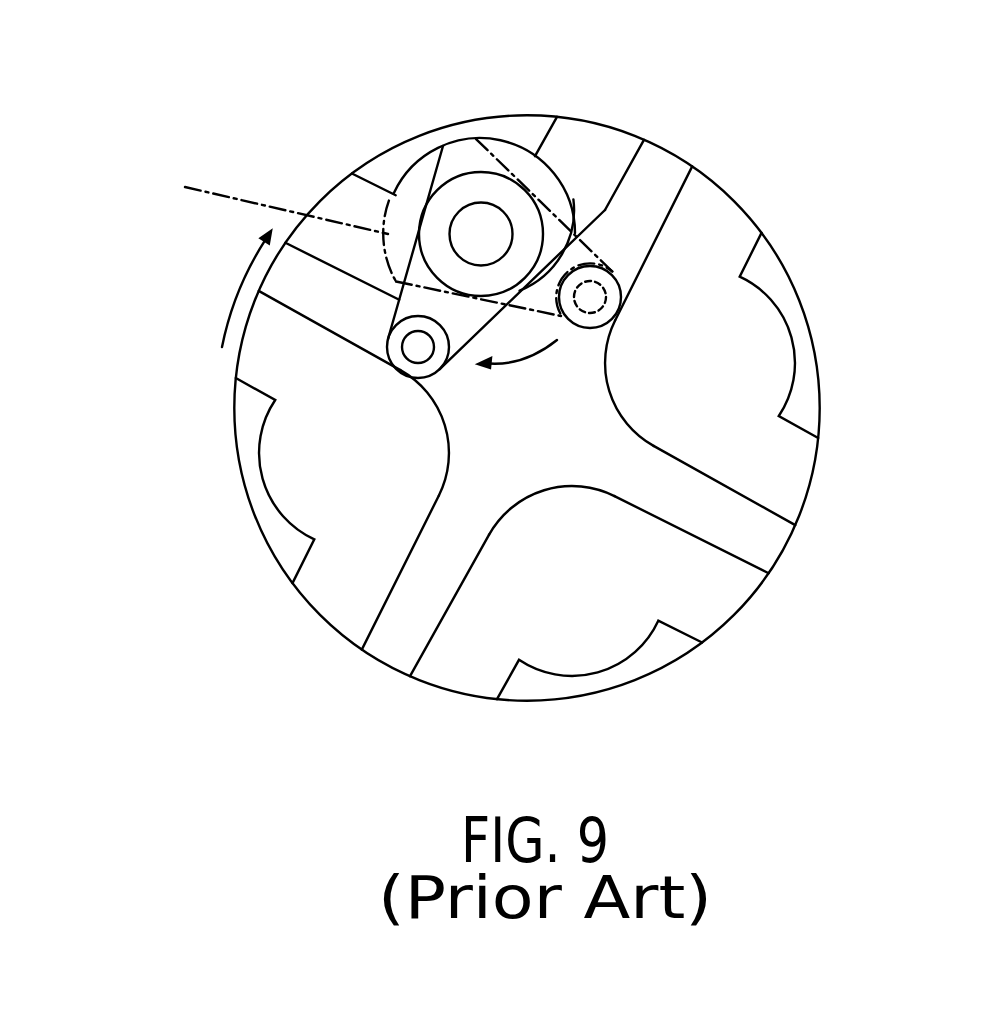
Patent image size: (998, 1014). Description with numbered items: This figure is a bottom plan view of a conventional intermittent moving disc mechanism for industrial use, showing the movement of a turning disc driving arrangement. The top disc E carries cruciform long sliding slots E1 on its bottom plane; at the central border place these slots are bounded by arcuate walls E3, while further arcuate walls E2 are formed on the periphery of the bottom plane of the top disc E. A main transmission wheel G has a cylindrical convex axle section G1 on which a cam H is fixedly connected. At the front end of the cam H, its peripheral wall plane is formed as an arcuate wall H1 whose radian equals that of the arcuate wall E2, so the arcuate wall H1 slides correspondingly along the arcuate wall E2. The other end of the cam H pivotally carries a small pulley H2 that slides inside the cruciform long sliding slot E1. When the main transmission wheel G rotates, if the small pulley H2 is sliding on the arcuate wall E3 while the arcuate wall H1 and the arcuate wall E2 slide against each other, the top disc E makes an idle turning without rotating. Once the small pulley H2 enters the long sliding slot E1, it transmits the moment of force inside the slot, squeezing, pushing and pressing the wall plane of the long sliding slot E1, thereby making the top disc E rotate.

The top disc E is at (744, 198).
The cruciform long sliding slot E1 is at (657, 187).
The arcuate wall E2 is at (806, 318).
The arcuate wall E3 is at (612, 393).
The main transmission wheel G is at (460, 193).
The cylindrical convex axle section G1 is at (508, 200).
The cam H is at (548, 190).
The arcuate wall H1 is at (490, 137).
The small pulley H2 is at (392, 361).